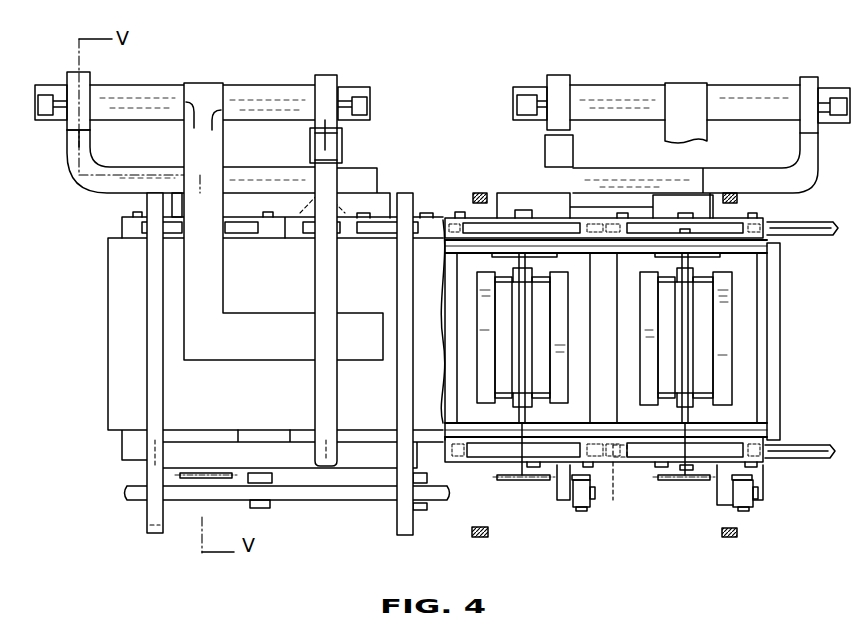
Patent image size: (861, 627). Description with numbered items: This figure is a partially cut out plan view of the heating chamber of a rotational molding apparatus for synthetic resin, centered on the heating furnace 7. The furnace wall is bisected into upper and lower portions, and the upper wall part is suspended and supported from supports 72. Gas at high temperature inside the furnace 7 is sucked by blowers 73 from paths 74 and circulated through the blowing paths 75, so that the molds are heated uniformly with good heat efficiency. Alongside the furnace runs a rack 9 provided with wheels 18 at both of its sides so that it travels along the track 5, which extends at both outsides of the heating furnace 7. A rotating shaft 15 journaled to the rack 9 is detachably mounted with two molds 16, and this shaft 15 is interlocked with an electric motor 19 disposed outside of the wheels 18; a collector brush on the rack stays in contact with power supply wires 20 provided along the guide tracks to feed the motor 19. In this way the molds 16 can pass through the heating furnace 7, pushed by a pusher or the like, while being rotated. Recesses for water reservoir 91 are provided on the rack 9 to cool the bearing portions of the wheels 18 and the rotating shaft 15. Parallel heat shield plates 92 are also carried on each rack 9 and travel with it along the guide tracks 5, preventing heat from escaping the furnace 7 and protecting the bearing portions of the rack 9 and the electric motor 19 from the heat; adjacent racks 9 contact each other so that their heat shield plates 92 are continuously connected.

The track 5 is at (807, 233).
The heating furnace 7 is at (122, 378).
The rack 9 is at (480, 467).
The rotating shaft 15 is at (687, 377).
The mold 16 is at (725, 348).
The wheel 18 is at (763, 218).
The electric motor 19 is at (736, 490).
The power supply wire 20 is at (333, 497).
The support 72 is at (731, 192).
The blower 73 is at (85, 87).
The path 74 is at (220, 333).
The blowing path 75 is at (80, 124).
The recess for water reservoir 91 is at (652, 212).
The heat shield plate 92 is at (615, 253).